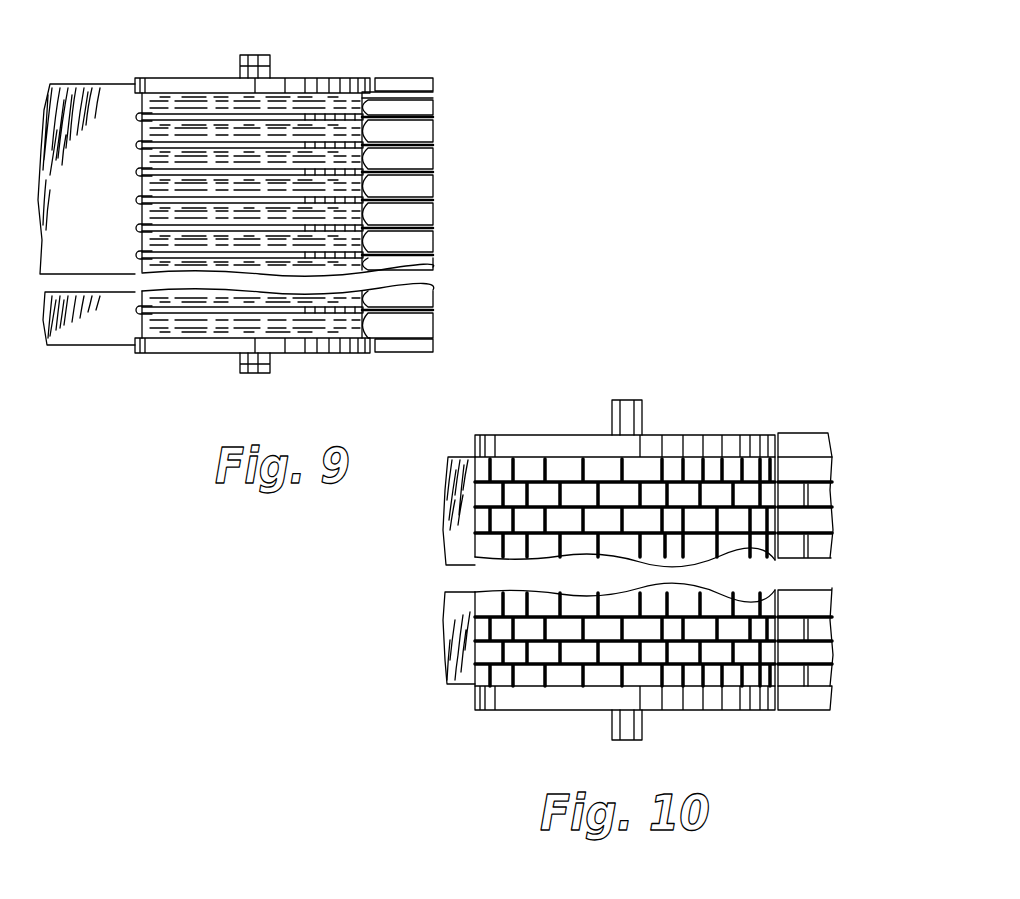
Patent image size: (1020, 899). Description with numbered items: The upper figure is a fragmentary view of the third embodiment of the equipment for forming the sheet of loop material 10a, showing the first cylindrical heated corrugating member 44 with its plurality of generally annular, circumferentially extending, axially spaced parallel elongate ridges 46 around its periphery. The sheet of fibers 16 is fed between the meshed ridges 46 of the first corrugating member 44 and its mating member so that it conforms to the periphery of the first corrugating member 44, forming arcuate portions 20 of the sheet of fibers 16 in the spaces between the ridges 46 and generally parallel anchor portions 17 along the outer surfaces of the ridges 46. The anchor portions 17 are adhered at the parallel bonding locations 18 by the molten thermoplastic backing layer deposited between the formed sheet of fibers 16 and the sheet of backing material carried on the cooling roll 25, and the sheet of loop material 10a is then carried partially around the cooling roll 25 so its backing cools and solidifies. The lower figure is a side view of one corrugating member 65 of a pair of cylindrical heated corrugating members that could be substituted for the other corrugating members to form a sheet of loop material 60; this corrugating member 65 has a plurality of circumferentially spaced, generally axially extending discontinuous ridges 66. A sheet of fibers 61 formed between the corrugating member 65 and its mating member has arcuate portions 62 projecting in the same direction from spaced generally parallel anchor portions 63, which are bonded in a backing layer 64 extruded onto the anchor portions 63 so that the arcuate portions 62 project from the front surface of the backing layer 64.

In FIG. 9, the sheet of fibers 16 is at (85, 85).
In FIG. 9, the cooling roll 25 is at (403, 354).
In FIG. 10, the cooling roll 25 is at (797, 702).
In FIG. 9, the sheet of loop material 10a is at (337, 225).
In FIG. 9, the bonding locations 18 is at (437, 142).
In FIG. 9, the arcuate portions 20 is at (421, 213).
In FIG. 9, the anchor portions 17 is at (436, 256).
In FIG. 9, the first corrugating member 44 is at (200, 355).
In FIG. 9, the ridges 46 is at (325, 312).
In FIG. 10, the backing layer 64 is at (825, 455).
In FIG. 10, the sheet of loop material 60 is at (684, 565).
In FIG. 10, the anchor portions 63 is at (817, 543).
In FIG. 10, the arcuate portions 62 is at (827, 643).
In FIG. 10, the sheet of fibers 61 is at (461, 685).
In FIG. 10, the discontinuous ridges 66 is at (605, 663).
In FIG. 10, the corrugating member 65 is at (699, 694).